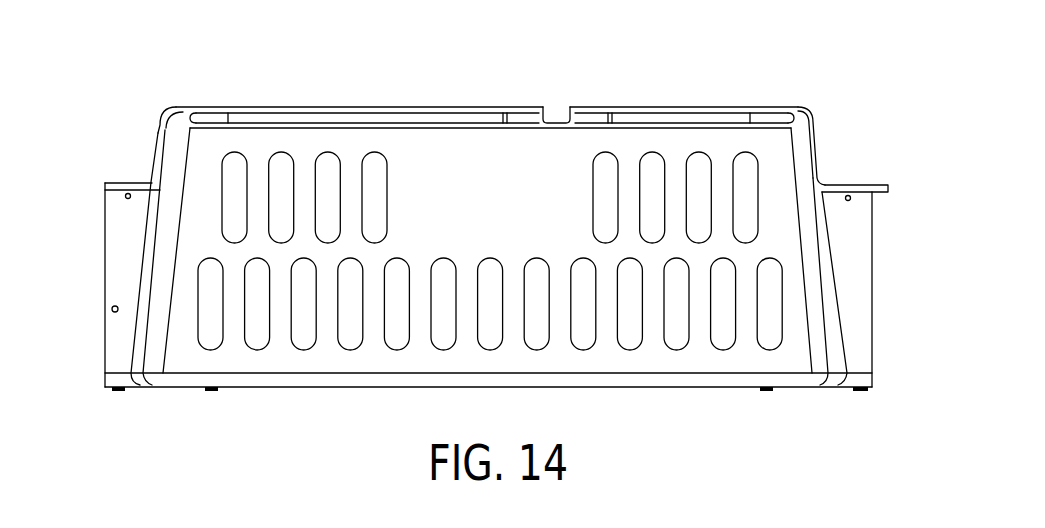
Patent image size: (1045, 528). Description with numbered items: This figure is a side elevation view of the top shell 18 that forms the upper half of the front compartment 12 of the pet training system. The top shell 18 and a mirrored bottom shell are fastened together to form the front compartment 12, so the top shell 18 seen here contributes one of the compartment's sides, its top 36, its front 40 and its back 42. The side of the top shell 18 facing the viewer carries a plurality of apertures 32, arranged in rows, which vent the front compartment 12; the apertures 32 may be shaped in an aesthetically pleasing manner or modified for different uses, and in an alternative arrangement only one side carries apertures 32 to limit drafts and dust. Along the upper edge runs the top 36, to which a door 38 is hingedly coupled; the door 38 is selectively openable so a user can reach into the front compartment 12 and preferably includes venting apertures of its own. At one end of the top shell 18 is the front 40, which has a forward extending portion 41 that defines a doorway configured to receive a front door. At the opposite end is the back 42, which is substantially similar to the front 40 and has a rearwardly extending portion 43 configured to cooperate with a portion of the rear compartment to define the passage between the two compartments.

The front compartment 12 is at (204, 82).
The top shell 18 is at (253, 107).
The apertures 32 is at (754, 200).
The top 36 is at (467, 95).
The door 38 is at (368, 125).
The front 40 is at (75, 370).
The forward extending portion 41 is at (122, 277).
The back 42 is at (910, 402).
The rearwardly extending portion 43 is at (860, 285).